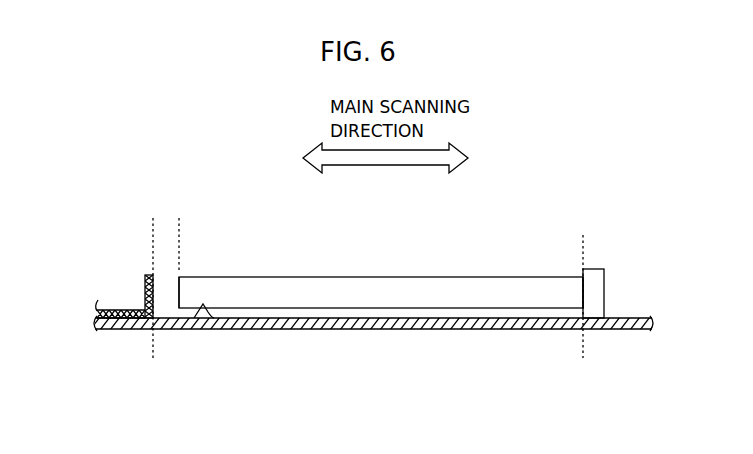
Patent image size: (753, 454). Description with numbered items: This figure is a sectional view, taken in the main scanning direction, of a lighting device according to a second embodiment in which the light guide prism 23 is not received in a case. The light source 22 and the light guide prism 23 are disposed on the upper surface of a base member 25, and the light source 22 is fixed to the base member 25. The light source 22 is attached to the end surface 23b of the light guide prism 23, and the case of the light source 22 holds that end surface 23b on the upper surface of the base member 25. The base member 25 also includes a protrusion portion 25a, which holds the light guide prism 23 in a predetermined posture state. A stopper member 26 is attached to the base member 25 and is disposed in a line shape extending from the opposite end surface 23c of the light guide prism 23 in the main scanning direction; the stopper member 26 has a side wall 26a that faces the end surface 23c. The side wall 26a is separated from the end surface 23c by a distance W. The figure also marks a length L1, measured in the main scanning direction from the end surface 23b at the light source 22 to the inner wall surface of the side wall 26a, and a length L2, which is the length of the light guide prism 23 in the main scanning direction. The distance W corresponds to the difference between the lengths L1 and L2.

The light source 22 is at (595, 285).
The light guide prism 23 is at (322, 295).
The end surface 23b is at (582, 297).
The end surface 23c is at (180, 290).
The base member 25 is at (479, 318).
The protrusion portion 25a is at (210, 318).
The stopper member 26 is at (127, 309).
The side wall 26a is at (147, 291).
The distance W is at (215, 232).
The length L1 is at (583, 345).
The length L2 is at (583, 262).